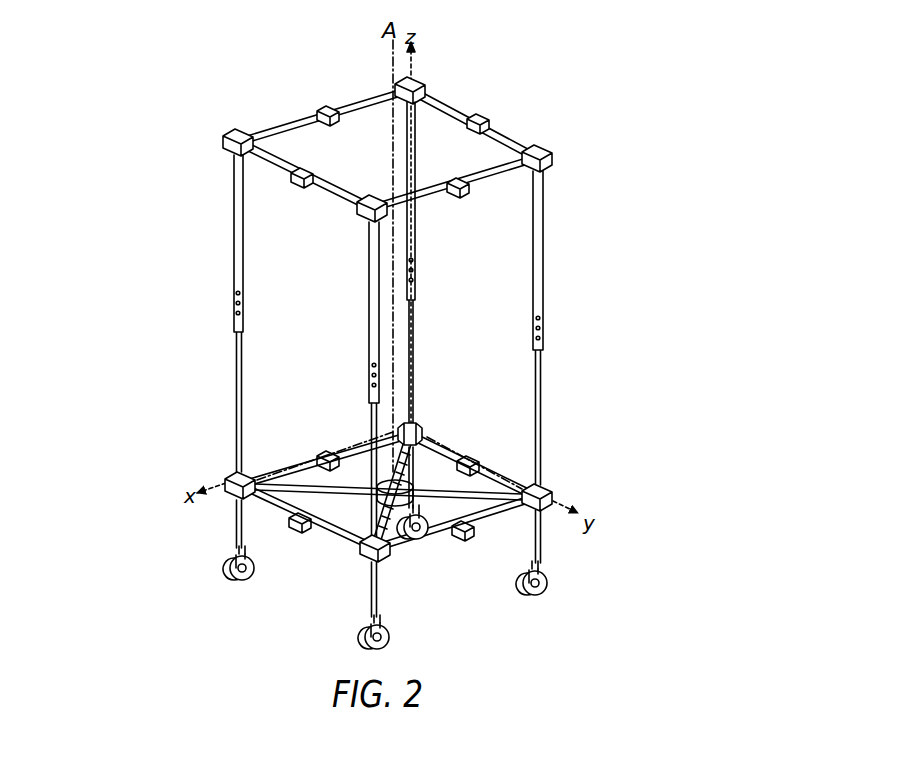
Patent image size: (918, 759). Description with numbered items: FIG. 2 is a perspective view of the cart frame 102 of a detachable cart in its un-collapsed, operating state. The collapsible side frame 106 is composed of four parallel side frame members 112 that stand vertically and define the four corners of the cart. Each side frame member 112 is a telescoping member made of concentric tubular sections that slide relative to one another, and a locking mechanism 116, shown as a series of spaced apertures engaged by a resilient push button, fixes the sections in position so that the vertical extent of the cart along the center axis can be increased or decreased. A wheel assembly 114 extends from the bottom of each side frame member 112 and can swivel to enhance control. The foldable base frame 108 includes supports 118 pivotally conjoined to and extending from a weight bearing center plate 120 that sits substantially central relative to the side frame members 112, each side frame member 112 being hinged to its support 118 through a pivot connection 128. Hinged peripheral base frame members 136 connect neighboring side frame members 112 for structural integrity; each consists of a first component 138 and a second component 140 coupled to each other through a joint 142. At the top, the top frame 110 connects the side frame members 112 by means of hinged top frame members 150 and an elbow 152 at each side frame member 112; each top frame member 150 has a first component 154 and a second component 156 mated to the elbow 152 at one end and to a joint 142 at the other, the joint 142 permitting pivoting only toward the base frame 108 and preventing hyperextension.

The cart frame 102 is at (656, 343).
The side frame 106 is at (200, 387).
The base frame 108 is at (514, 462).
The top frame 110 is at (178, 139).
The side frame members 112 is at (233, 230).
The wheel assemblies 114 is at (223, 566).
The locking mechanism 116 is at (208, 318).
The supports 118 is at (282, 462).
The center plate 120 is at (402, 480).
The pivot connection 128 is at (413, 424).
The peripheral base frame members 136 is at (290, 546).
The first component 138 is at (362, 444).
The second component 140 is at (333, 542).
The joint 142 is at (326, 106).
The top frame members 150 is at (417, 319).
The elbow 152 is at (240, 135).
The first component 154 is at (286, 120).
The second component 156 is at (378, 93).